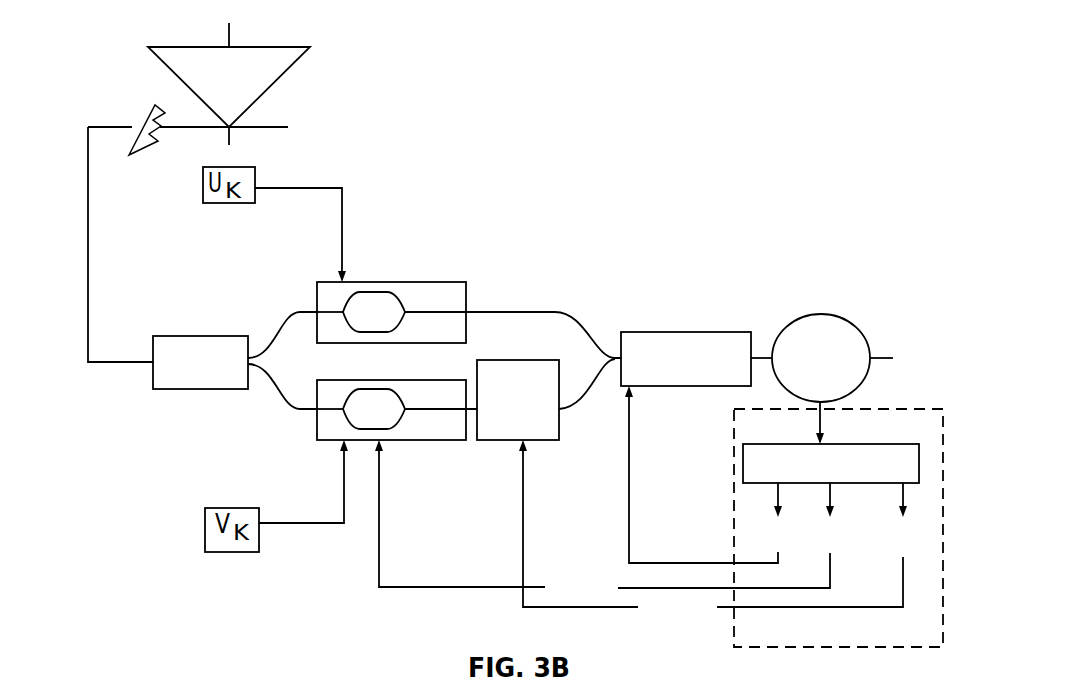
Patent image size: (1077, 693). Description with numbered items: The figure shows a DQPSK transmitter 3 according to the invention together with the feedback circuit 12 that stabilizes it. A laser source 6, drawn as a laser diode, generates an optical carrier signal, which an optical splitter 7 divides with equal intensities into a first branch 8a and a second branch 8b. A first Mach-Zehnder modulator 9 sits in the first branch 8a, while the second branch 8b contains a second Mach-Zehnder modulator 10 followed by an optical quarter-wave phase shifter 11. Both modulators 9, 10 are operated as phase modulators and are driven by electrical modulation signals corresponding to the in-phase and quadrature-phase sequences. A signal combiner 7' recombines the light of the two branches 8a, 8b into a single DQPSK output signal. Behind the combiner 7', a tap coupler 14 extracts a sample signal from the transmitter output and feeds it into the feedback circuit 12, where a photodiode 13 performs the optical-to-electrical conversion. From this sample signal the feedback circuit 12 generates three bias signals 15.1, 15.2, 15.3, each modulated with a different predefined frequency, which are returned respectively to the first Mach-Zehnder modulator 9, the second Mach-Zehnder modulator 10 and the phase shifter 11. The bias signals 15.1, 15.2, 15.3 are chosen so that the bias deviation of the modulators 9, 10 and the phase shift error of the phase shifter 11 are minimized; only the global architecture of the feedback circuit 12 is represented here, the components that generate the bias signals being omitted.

The DQPSK transmitter 3 is at (574, 208).
The laser source 6 is at (288, 47).
The optical splitter 7 is at (196, 349).
The signal combiner 7' is at (686, 329).
The first branch 8a is at (300, 308).
The second branch 8b is at (300, 412).
The first Mach-Zehnder modulator 9 is at (395, 282).
The second Mach-Zehnder modulator 10 is at (403, 440).
The π/2 phase shifter 11 is at (540, 440).
The feedback circuit 12 is at (915, 405).
The photodiode 13 is at (883, 444).
The tap coupler 14 is at (855, 326).
The first bias signal 15.1 is at (523, 513).
The second bias signal 15.2 is at (403, 587).
The third bias signal 15.3 is at (603, 607).